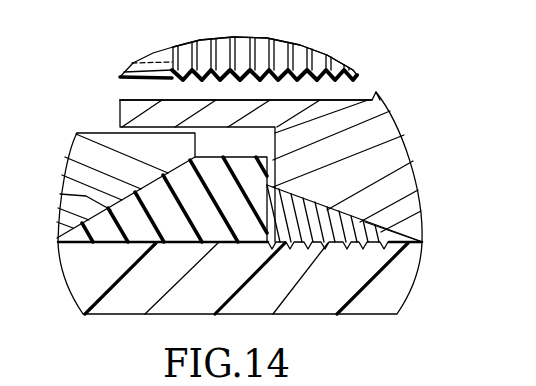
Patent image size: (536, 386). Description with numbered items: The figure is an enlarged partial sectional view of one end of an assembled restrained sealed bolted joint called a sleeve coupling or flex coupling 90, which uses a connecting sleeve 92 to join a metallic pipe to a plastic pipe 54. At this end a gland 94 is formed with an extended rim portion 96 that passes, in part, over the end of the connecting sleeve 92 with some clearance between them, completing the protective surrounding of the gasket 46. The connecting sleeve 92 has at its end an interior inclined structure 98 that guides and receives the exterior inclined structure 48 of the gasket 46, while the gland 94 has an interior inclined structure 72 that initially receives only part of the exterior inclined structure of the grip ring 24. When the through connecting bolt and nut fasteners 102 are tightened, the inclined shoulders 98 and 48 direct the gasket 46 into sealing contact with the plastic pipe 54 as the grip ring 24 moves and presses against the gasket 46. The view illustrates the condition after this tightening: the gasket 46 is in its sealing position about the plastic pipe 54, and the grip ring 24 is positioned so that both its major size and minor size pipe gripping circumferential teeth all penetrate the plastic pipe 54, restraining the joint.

The grip ring 24 is at (359, 253).
The gasket 46 is at (123, 243).
The exterior inclined structure 48 is at (61, 194).
The plastic pipe 54 is at (64, 278).
The interior inclined structure 72 is at (390, 246).
The flex coupling 90 is at (121, 77).
The connecting sleeve 92 is at (70, 148).
The gland 94 is at (131, 99).
The extended rim portion 96 is at (120, 112).
The interior inclined structure 98 is at (58, 243).
The through connecting bolt and nut fasteners 102 is at (153, 52).